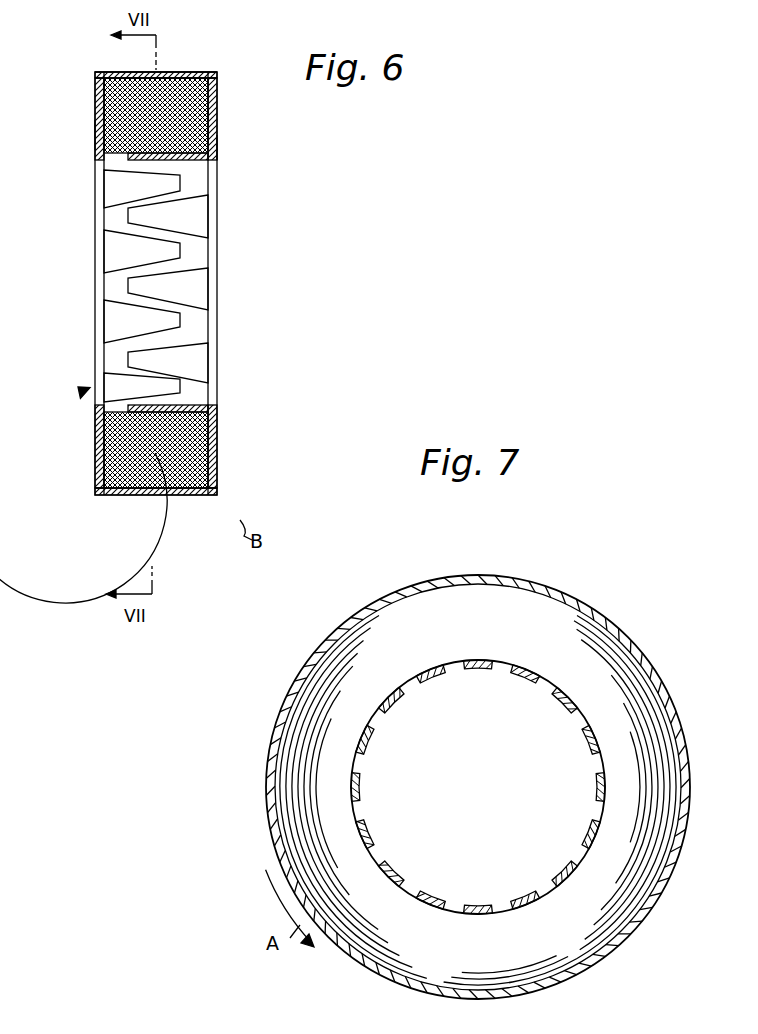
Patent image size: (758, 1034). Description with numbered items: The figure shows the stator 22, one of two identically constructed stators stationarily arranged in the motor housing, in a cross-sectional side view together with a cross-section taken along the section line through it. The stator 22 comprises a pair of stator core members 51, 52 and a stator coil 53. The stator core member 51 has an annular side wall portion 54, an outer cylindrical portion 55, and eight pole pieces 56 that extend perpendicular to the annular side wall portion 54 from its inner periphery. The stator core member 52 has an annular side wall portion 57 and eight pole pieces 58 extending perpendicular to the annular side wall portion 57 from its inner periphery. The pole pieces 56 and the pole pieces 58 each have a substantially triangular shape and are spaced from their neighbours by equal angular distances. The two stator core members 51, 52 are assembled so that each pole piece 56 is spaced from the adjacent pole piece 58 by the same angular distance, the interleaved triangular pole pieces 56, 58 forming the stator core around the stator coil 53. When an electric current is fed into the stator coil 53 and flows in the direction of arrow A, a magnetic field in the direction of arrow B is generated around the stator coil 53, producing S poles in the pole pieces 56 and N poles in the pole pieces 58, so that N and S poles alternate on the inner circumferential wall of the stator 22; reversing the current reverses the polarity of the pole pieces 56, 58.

In FIG. 6, the stator 22 is at (194, 73).
In FIG. 6, the stator core member 51 is at (99, 112).
In FIG. 7, the stator core member 51 is at (384, 597).
In FIG. 6, the stator core member 52 is at (218, 147).
In FIG. 6, the stator coil 53 is at (213, 103).
In FIG. 7, the stator coil 53 is at (342, 677).
In FIG. 6, the annular side wall portion 54 is at (100, 133).
In FIG. 6, the outer cylindrical portion 55 is at (118, 71).
In FIG. 7, the outer cylindrical portion 55 is at (518, 578).
In FIG. 6, the pole pieces 56 is at (115, 189).
In FIG. 7, the pole pieces 56 is at (440, 671).
In FIG. 6, the annular side wall portion 57 is at (217, 125).
In FIG. 6, the pole pieces 58 is at (196, 162).
In FIG. 7, the pole pieces 58 is at (488, 668).